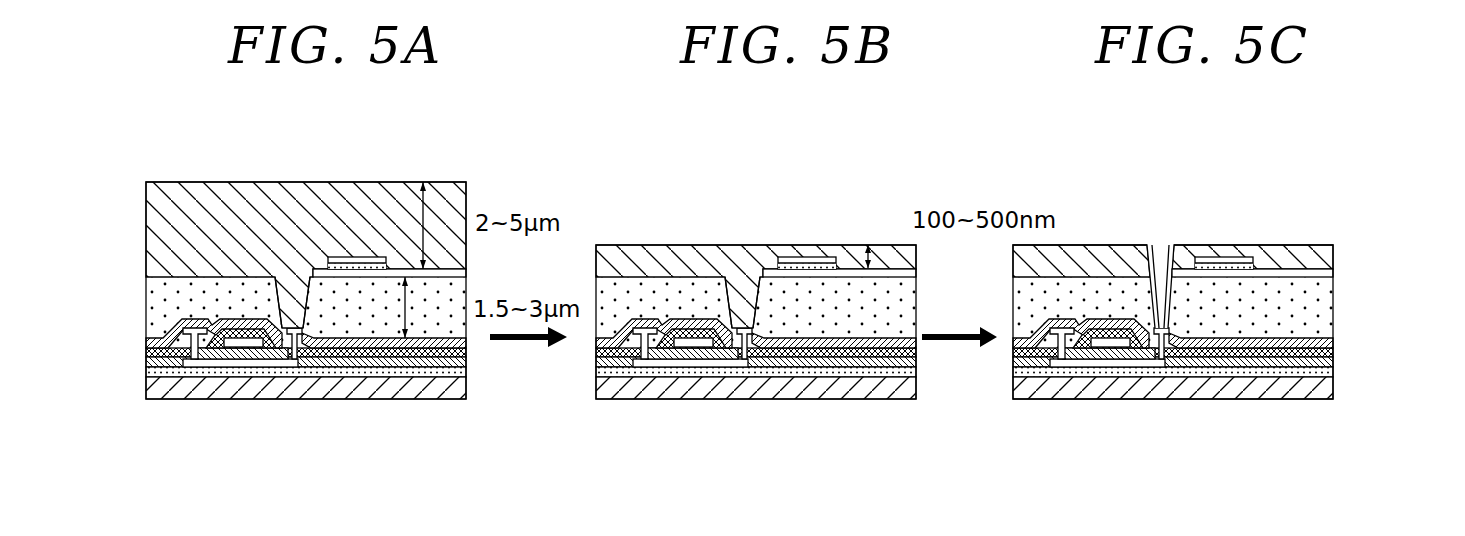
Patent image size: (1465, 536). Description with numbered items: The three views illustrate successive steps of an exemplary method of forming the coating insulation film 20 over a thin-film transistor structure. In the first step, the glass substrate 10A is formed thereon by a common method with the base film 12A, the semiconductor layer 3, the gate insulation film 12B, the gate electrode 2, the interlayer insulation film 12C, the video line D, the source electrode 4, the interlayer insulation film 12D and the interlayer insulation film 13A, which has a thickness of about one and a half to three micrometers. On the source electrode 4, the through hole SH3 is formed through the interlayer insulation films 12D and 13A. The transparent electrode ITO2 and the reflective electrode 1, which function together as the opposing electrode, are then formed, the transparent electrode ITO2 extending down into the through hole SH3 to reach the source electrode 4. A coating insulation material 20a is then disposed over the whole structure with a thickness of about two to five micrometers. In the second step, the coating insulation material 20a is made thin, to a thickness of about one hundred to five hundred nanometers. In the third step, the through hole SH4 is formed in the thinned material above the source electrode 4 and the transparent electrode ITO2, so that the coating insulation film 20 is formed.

In FIG. 5A, the reflective electrode 1 is at (357, 201).
In FIG. 5B, the reflective electrode 1 is at (807, 230).
In FIG. 5C, the reflective electrode 1 is at (1224, 229).
In FIG. 5A, the gate electrode 2 is at (243, 386).
In FIG. 5B, the gate electrode 2 is at (693, 386).
In FIG. 5C, the gate electrode 2 is at (1110, 386).
In FIG. 5A, the semiconductor layer 3 is at (240, 404).
In FIG. 5B, the semiconductor layer 3 is at (690, 404).
In FIG. 5C, the semiconductor layer 3 is at (1107, 404).
In FIG. 5A, the source electrode 4 is at (292, 390).
In FIG. 5B, the source electrode 4 is at (741, 390).
In FIG. 5C, the source electrode 4 is at (1159, 390).
In FIG. 5A, the video line D is at (151, 329).
In FIG. 5B, the video line D is at (629, 390).
In FIG. 5C, the video line D is at (1047, 390).
In FIG. 5A, the glass substrate 10A is at (321, 388).
In FIG. 5B, the glass substrate 10A is at (734, 391).
In FIG. 5C, the glass substrate 10A is at (1215, 400).
In FIG. 5A, the base film 12A is at (321, 373).
In FIG. 5B, the base film 12A is at (734, 372).
In FIG. 5C, the base film 12A is at (1215, 380).
In FIG. 5A, the gate insulation film 12B is at (321, 360).
In FIG. 5B, the gate insulation film 12B is at (734, 360).
In FIG. 5C, the gate insulation film 12B is at (1215, 355).
In FIG. 5A, the interlayer insulation film 12C is at (269, 367).
In FIG. 5B, the interlayer insulation film 12C is at (790, 381).
In FIG. 5C, the interlayer insulation film 12C is at (1160, 374).
In FIG. 5A, the interlayer insulation film 12D is at (269, 338).
In FIG. 5B, the interlayer insulation film 12D is at (791, 351).
In FIG. 5C, the interlayer insulation film 12D is at (1160, 343).
In FIG. 5A, the interlayer insulation film 13A is at (269, 311).
In FIG. 5B, the interlayer insulation film 13A is at (790, 312).
In FIG. 5C, the interlayer insulation film 13A is at (1160, 312).
In FIG. 5A, the transparent electrode ITO2 is at (321, 274).
In FIG. 5B, the transparent electrode ITO2 is at (876, 270).
In FIG. 5C, the transparent electrode ITO2 is at (1287, 286).
In FIG. 5A, the coating insulation material 20a is at (254, 190).
In FIG. 5C, the coating insulation film 20 is at (1173, 233).
In FIG. 5A, the through hole SH3 is at (283, 230).
In FIG. 5C, the through hole SH4 is at (1151, 257).